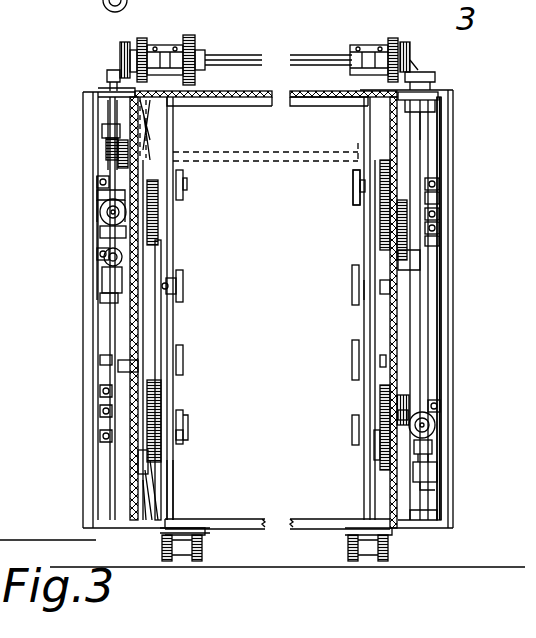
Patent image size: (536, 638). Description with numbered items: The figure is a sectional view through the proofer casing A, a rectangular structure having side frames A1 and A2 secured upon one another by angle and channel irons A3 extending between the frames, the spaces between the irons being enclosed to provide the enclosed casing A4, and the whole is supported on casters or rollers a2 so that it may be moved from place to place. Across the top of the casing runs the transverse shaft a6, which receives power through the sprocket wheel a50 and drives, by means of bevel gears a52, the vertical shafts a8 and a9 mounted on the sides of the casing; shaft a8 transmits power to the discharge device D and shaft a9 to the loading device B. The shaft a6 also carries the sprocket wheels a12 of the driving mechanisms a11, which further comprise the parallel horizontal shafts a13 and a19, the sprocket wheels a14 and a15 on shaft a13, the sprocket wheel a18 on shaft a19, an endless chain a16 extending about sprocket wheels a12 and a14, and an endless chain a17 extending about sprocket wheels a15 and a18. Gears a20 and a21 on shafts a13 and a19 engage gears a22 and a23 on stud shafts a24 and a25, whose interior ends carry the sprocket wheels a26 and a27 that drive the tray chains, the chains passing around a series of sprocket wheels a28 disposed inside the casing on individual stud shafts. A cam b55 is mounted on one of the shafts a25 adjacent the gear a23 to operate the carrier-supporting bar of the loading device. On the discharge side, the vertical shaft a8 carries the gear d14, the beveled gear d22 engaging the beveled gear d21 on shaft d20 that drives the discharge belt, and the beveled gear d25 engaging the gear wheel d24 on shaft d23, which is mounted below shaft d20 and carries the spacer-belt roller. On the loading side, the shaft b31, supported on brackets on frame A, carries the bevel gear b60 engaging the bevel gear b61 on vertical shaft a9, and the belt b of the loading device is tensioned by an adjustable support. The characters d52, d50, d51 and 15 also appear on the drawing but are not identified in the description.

The bevel gears a52 is at (108, 77).
The sprocket wheels a12 is at (143, 45).
The sprocket wheel a50 is at (190, 42).
The transverse shaft a6 is at (245, 58).
The proofer casing A is at (300, 97).
The belt b is at (459, 11).
The vertical shaft a8 is at (112, 112).
The gear d14 is at (108, 128).
The gear d52 is at (112, 142).
The gear d50 is at (122, 160).
The bracket d51 is at (118, 186).
The beveled gear d21 is at (98, 202).
The shaft d20 is at (100, 218).
The beveled gear d22 is at (108, 238).
The gear wheel d24 is at (105, 256).
The shaft d23 is at (105, 270).
The beveled gear d25 is at (108, 284).
The discharge device D is at (48, 238).
The driving mechanisms a11 is at (372, 240).
The sprocket wheel a26 is at (184, 183).
The horizontal shaft a13 is at (160, 246).
The sprocket wheels a28 is at (186, 286).
The horizontal shaft a19 is at (135, 355).
The stud shaft a25 is at (140, 392).
The gear a23 is at (178, 414).
The sprocket wheel a27 is at (184, 441).
The cam b55 is at (140, 466).
The side frame A1 is at (168, 470).
The casters or rollers a2 is at (165, 528).
The angle and channel irons A3 is at (170, 548).
The side frame A2 is at (378, 548).
The enclosed casing A4 is at (309, 280).
The stud shaft a24 is at (352, 188).
The gear a22 is at (352, 180).
The gear a20 is at (380, 235).
The endless chain a17 is at (395, 325).
The plate 15 is at (372, 362).
The gear a21 is at (378, 420).
The sprocket wheel a18 is at (390, 440).
The endless chain a16 is at (396, 135).
The vertical shaft a9 is at (420, 172).
The sprocket wheel a14 is at (440, 205).
The sprocket wheel a15 is at (440, 220).
The loading device B is at (440, 418).
The shaft b31 is at (436, 426).
The bevel gear b60 is at (434, 438).
The bevel gear b61 is at (436, 462).